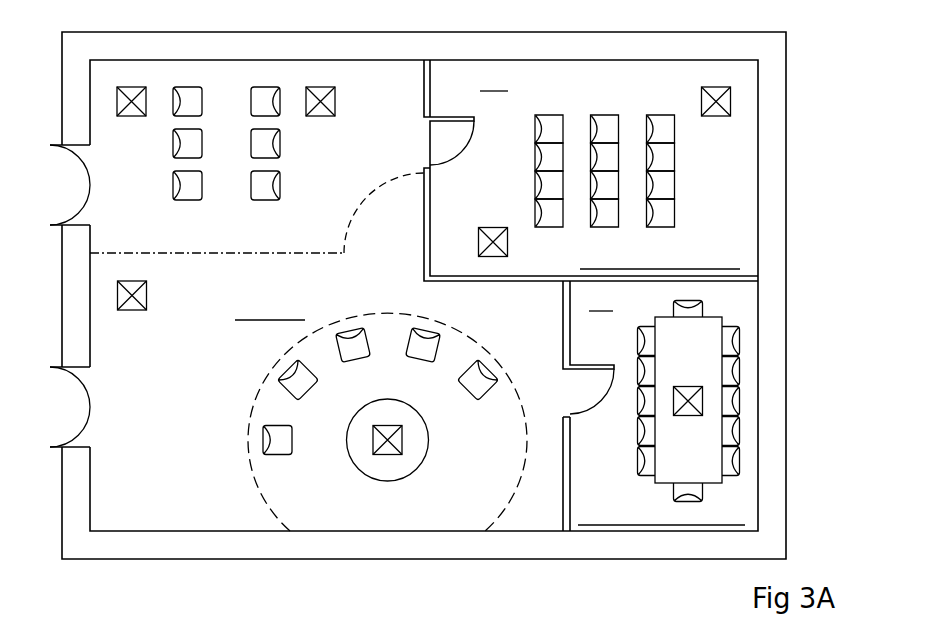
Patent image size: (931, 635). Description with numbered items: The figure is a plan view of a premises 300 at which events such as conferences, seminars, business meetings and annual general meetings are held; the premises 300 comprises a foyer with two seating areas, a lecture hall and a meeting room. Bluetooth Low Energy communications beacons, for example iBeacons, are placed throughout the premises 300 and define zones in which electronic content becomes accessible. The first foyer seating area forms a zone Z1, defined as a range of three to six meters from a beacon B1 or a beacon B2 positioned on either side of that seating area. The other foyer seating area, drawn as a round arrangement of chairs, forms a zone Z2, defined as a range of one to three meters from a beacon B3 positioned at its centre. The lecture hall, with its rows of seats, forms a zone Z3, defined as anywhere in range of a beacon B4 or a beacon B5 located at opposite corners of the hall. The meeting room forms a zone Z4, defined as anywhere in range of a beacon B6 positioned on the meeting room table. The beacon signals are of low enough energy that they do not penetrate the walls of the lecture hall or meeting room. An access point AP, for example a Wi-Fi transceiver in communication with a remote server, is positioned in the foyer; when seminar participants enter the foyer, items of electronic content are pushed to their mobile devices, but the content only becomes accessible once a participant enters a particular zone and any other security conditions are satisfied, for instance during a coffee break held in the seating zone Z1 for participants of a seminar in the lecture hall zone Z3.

The premises 300 is at (712, 33).
The zone Z1 is at (350, 252).
The zone Z2 is at (462, 345).
The zone Z3 is at (610, 170).
The zone Z4 is at (661, 408).
The beacon B1 is at (336, 101).
The beacon B2 is at (130, 90).
The beacon B3 is at (402, 438).
The beacon B4 is at (483, 228).
The beacon B5 is at (703, 94).
The beacon B6 is at (688, 387).
The access point AP is at (148, 296).